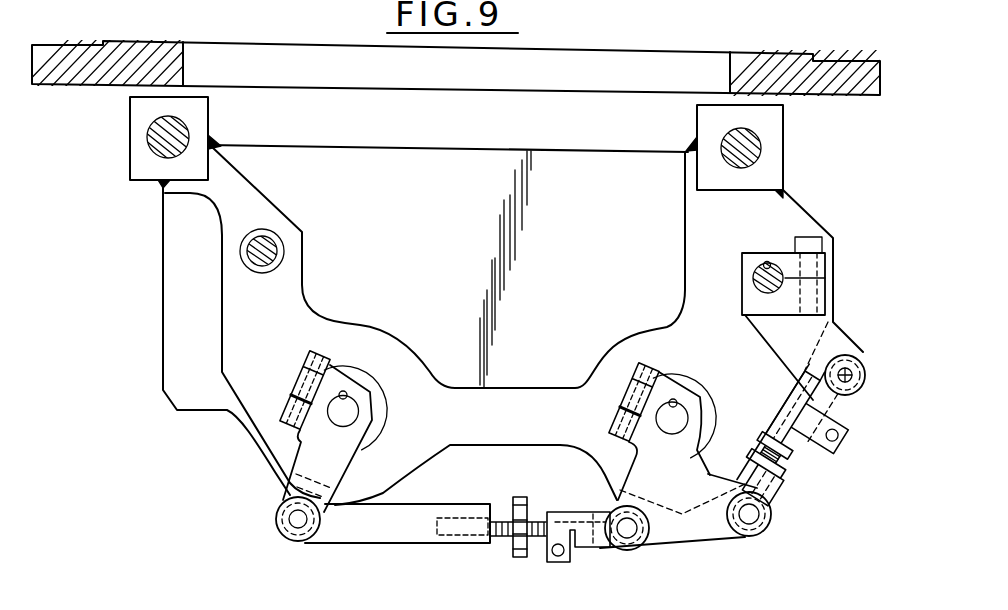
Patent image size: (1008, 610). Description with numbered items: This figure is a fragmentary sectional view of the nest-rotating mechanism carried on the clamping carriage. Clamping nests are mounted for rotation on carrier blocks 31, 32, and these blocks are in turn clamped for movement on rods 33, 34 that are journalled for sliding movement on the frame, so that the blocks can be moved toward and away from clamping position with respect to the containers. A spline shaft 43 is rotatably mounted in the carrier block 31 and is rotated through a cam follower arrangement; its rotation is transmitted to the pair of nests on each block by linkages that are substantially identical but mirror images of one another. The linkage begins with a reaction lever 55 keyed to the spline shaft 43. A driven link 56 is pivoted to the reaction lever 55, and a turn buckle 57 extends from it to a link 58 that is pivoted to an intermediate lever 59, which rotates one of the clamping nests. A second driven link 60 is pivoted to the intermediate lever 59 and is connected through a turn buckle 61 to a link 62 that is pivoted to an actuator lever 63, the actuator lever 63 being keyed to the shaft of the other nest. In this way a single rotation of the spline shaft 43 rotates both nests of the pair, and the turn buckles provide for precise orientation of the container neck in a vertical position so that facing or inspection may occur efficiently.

The carrier block 31 is at (800, 215).
The carrier block 32 is at (235, 323).
The rod 33 is at (760, 148).
The rod 34 is at (160, 137).
The spline shaft 43 is at (755, 292).
The reaction lever 55 is at (792, 338).
The driven link 56 is at (800, 402).
The turn buckle 57 is at (818, 468).
The link 58 is at (778, 495).
The intermediate lever 59 is at (690, 535).
The driven link 60 is at (588, 545).
The turn buckle 61 is at (505, 553).
The link 62 is at (378, 528).
The actuator lever 63 is at (345, 412).